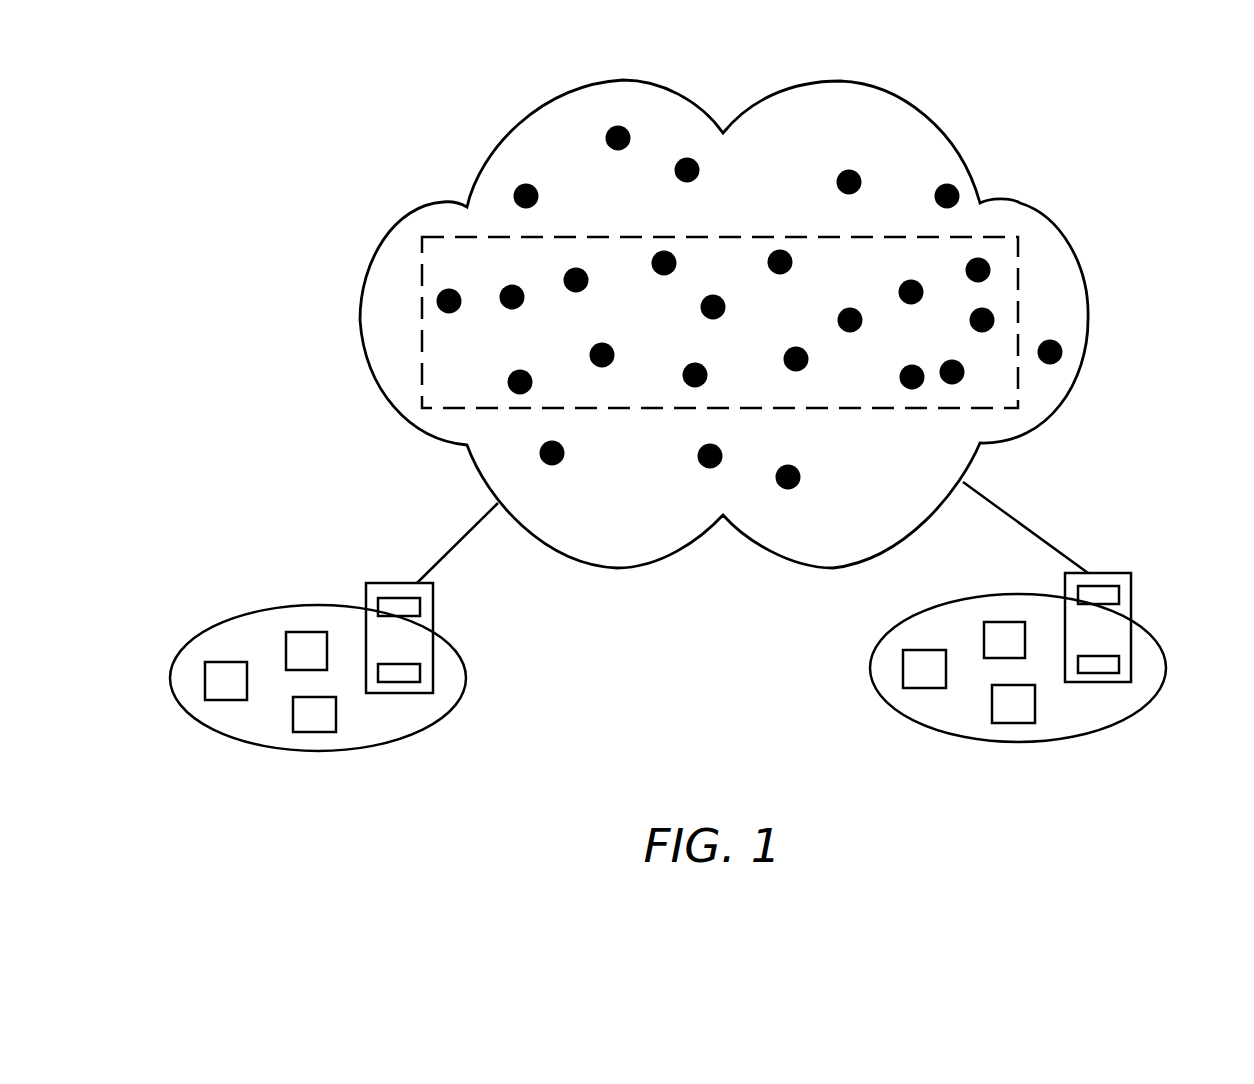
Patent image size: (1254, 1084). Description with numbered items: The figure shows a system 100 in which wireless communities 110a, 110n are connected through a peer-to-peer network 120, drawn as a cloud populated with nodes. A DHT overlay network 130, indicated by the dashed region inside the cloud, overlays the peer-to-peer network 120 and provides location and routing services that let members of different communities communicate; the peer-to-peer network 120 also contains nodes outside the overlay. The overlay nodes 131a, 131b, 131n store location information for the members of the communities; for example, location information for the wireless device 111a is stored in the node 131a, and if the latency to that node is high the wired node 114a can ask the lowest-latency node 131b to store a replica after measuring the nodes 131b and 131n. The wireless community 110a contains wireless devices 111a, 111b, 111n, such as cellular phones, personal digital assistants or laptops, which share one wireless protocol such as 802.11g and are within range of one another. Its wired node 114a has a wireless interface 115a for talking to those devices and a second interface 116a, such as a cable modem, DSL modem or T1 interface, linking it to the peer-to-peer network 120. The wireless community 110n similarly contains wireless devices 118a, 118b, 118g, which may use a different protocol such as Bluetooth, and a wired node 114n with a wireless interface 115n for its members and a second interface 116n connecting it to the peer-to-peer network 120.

The system 100 is at (710, 51).
The peer-to-peer network 120 is at (1030, 205).
The DHT overlay network 130 is at (882, 410).
The node 131a is at (790, 266).
The node 131b is at (586, 284).
The node 131n is at (705, 379).
The wireless community 110a is at (427, 730).
The wireless community 110n is at (1127, 720).
The wired node 114a is at (384, 583).
The wired node 114n is at (1113, 573).
The wireless interface 115a is at (420, 673).
The wireless interface 115n is at (1119, 665).
The second interface 116a is at (420, 607).
The second interface 116n is at (1119, 595).
The wireless device 111a is at (205, 679).
The wireless device 111b is at (313, 733).
The wireless device 111n is at (300, 632).
The wireless device 118a is at (1000, 622).
The wireless device 118b is at (1012, 723).
The wireless device 118g is at (903, 667).